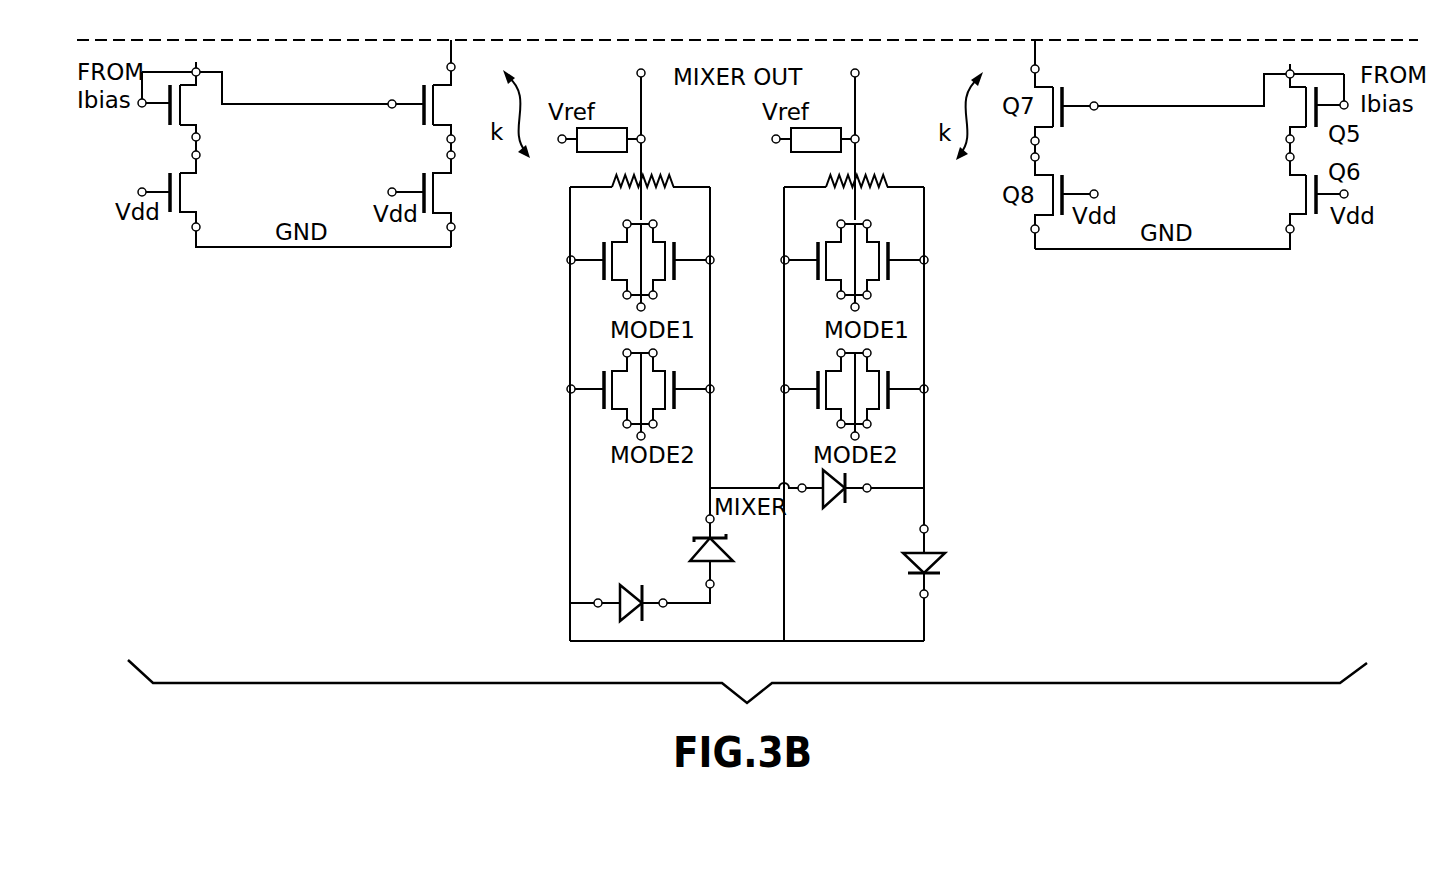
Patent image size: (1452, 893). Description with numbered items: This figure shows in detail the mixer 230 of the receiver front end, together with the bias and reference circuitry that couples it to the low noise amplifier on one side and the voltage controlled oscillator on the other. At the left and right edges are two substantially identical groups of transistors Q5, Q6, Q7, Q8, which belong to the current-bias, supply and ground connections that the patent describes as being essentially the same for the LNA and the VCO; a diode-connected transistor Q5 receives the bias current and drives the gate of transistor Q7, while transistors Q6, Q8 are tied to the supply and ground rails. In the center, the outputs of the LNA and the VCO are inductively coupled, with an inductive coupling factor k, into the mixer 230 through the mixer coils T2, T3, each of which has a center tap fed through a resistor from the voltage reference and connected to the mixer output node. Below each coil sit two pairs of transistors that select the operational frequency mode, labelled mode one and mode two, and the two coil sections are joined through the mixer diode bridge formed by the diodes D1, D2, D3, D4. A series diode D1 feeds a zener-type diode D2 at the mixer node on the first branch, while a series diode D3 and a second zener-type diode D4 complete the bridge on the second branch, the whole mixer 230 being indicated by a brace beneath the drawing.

The mixer 230 is at (698, 355).
The transistor Q5 is at (260, 102).
The transistor Q6 is at (291, 194).
The transistor Q7 is at (437, 91).
The transistor Q8 is at (437, 195).
The mixer coil T2 is at (659, 169).
The mixer coil T3 is at (874, 169).
The diode D1 is at (614, 592).
The diode D2 is at (704, 561).
The diode D3 is at (817, 506).
The diode D4 is at (936, 583).